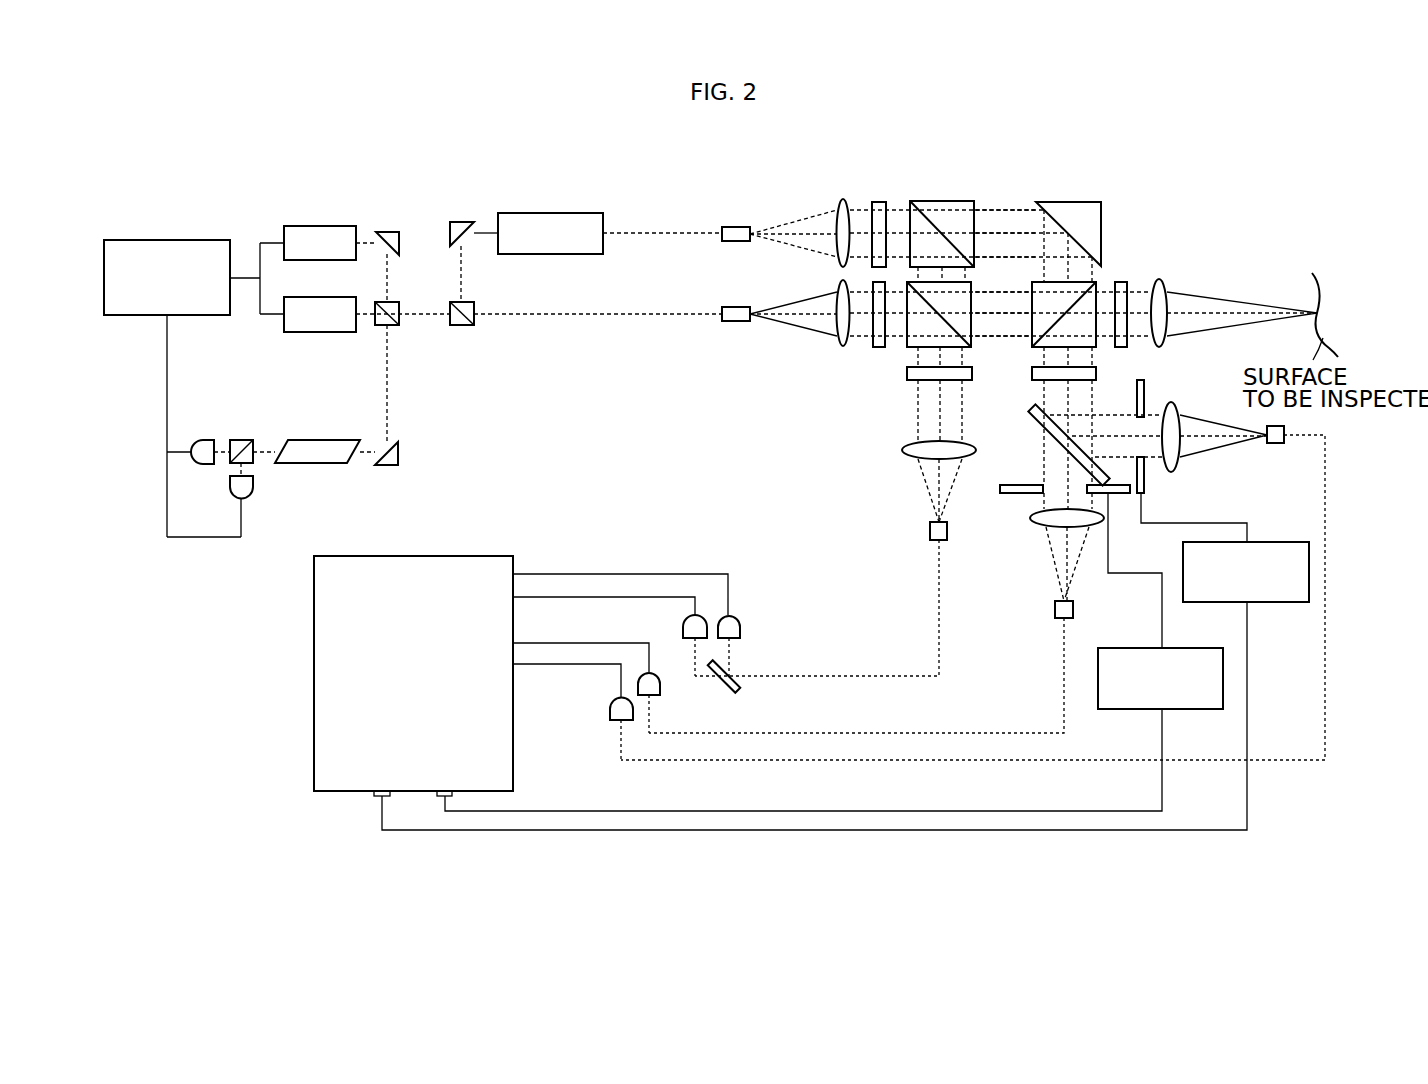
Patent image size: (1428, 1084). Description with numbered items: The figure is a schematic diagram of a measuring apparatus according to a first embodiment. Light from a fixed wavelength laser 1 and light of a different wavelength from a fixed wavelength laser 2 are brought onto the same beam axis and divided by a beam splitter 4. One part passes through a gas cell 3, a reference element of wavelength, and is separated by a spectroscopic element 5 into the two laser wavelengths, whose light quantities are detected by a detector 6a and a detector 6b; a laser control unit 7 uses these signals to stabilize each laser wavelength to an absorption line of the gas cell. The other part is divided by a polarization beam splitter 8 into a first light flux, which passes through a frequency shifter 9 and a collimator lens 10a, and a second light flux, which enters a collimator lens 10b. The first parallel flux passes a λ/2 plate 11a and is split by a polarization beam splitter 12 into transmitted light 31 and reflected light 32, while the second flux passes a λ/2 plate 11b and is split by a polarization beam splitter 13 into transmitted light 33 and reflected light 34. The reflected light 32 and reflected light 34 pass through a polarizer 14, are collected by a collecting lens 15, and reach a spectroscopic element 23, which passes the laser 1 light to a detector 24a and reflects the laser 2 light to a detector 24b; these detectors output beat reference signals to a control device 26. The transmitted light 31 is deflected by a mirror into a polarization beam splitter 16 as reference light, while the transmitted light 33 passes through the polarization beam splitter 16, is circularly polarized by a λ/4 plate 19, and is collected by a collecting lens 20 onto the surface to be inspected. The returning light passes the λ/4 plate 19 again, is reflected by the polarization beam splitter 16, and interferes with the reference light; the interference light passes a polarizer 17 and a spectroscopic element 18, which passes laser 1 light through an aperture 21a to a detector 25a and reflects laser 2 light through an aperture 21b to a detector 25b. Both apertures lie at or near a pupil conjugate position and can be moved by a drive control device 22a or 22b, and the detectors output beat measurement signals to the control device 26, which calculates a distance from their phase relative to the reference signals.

The fixed wavelength laser 1 is at (320, 226).
The fixed wavelength laser 2 is at (320, 332).
The gas cell 3 is at (321, 439).
The beam splitter 4 is at (393, 326).
The spectroscopic element 5 is at (240, 439).
The detector 6a is at (206, 439).
The detector 6b is at (230, 486).
The laser control unit 7 is at (165, 240).
The polarization beam splitter 8 is at (462, 326).
The frequency shifter 9 is at (550, 213).
The collimator lens 10a is at (843, 200).
The collimator lens 10b is at (840, 282).
The λ/2 plate 11a is at (879, 202).
The λ/2 plate 11b is at (879, 347).
The polarization beam splitter 12 is at (942, 201).
The polarization beam splitter 13 is at (908, 347).
The polarizer 14 is at (972, 372).
The collecting lens 15 is at (904, 453).
The polarization beam splitter 16 is at (1080, 282).
The polarizer 17 is at (1096, 372).
The spectroscopic element 18 is at (1036, 422).
The λ/4 plate 19 is at (1121, 282).
The collecting lens 20 is at (1159, 347).
The aperture 21a is at (1020, 493).
The aperture 21b is at (1144, 392).
The drive control device 22a is at (1135, 709).
The drive control device 22b is at (1272, 603).
The spectroscopic element 23 is at (740, 688).
The detector 24a is at (683, 620).
The detector 24b is at (741, 628).
The detector 25a is at (661, 686).
The detector 25b is at (610, 708).
The control device 26 is at (440, 565).
The transmitted light 31 is at (1003, 210).
The reflected light 32 is at (965, 269).
The transmitted light 33 is at (1008, 339).
The reflected light 34 is at (915, 360).